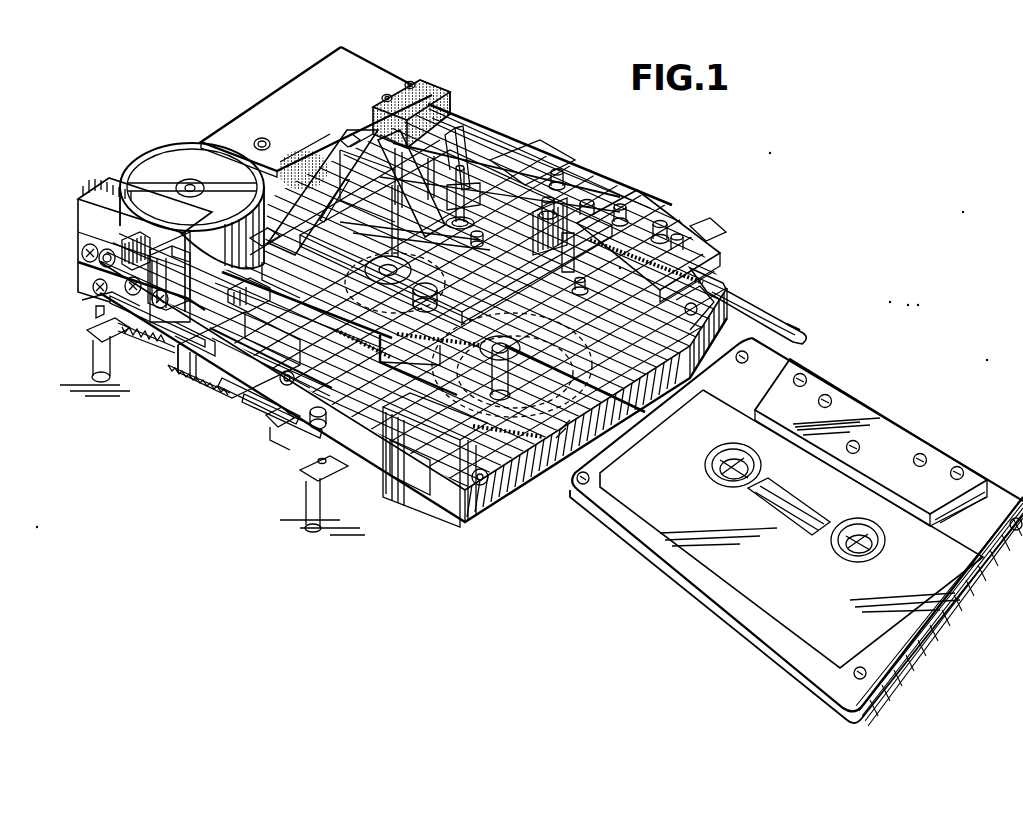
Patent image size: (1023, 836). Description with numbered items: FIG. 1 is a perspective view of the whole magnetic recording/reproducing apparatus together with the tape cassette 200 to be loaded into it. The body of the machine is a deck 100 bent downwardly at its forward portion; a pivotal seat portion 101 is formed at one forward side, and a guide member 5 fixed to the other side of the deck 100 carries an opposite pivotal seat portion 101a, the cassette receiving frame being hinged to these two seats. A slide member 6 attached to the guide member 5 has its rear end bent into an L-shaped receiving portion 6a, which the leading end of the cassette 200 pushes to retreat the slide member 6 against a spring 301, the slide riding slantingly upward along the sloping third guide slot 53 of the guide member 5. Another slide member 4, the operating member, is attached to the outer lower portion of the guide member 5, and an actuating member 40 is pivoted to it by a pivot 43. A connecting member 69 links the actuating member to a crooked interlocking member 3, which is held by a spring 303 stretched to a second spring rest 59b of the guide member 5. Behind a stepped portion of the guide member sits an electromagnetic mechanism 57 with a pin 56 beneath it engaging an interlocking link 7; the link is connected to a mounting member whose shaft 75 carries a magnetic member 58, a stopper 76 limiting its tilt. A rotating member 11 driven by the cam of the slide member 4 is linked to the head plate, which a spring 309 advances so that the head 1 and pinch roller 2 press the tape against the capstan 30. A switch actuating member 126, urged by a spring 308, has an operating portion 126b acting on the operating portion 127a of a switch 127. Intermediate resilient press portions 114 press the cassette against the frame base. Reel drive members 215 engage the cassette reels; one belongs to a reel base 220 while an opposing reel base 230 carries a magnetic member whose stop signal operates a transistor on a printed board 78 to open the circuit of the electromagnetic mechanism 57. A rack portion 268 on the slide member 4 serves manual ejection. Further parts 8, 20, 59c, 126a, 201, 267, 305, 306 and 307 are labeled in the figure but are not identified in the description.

The head 1 is at (605, 192).
The pinch roller 2 is at (503, 158).
The interlocking member 3 is at (240, 403).
The slide member 4 is at (265, 372).
The guide member 5 is at (458, 510).
The slide member 6 is at (395, 306).
The L-shaped receiving portion 6a is at (252, 238).
The interlocking link 7 is at (110, 298).
The cassette guide arm 8 is at (757, 304).
The rotating member 11 is at (424, 328).
The flywheel 20 is at (176, 160).
The capstan 30 is at (472, 162).
The actuating member 40 is at (243, 412).
The pivot 43 is at (318, 426).
The third guide slot 53 is at (233, 290).
The pin 56 is at (172, 330).
The electromagnetic mechanism 57 is at (128, 241).
The magnetic member 58 is at (84, 243).
The second spring rest 59b is at (435, 460).
The frame step 59c is at (418, 365).
The connecting member 69 is at (272, 428).
The shaft 75 is at (100, 262).
The stopper 76 is at (98, 233).
The printed board 78 is at (279, 96).
The deck 100 is at (575, 438).
The pivotal seat portion 101 is at (720, 287).
The pivotal seat portion 101a is at (480, 497).
The intermediate resilient press portions 114 is at (516, 287).
The switch actuating member 126 is at (380, 120).
The head base tab 126a is at (343, 141).
The operating portion 126b is at (410, 82).
The switch 127 is at (428, 81).
The operating portion 127a is at (398, 97).
The cassette 200 is at (686, 607).
The reel hub 201 is at (722, 474).
The reel drive member 215 is at (408, 278).
The reel base 220 is at (570, 392).
The reel base 230 is at (357, 268).
The rack 267 is at (190, 381).
The rack portion 268 is at (420, 481).
The spring 301 is at (306, 414).
The spring 303 is at (285, 386).
The slide bar 305 is at (153, 332).
The flywheel hub 306 is at (253, 260).
The roller 307 is at (558, 206).
The spring 308 is at (457, 140).
The spring 309 is at (550, 196).